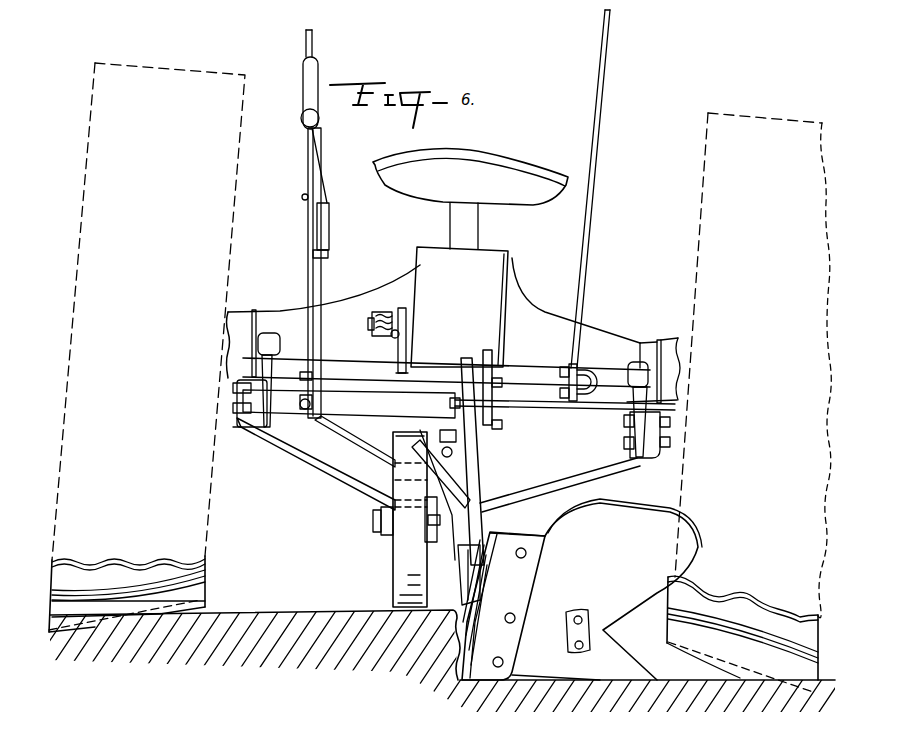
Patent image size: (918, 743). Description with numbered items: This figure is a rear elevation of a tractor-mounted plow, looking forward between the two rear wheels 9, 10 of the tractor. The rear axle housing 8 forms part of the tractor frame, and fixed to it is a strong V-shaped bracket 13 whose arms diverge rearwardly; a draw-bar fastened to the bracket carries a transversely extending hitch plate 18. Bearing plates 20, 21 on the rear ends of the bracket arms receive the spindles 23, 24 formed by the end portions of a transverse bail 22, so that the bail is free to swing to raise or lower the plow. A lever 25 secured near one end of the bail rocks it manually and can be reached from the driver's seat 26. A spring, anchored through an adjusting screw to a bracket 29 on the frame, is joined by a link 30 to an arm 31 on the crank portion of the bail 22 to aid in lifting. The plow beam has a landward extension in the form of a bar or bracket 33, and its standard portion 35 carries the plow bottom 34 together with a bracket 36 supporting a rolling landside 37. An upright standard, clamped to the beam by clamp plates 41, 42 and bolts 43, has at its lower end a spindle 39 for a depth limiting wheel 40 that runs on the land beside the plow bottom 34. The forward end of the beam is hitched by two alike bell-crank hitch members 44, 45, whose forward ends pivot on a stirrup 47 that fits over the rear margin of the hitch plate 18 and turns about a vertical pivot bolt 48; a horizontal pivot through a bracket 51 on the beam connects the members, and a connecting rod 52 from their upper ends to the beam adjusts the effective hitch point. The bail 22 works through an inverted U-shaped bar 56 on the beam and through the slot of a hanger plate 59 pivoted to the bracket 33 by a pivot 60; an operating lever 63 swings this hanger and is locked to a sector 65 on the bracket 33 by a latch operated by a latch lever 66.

The rear axle housing 8 is at (300, 322).
The rear wheel 9 is at (205, 566).
The rear wheel 10 is at (682, 595).
The V-shaped bracket 13 is at (620, 455).
The hitch plate 18 is at (505, 478).
The bearing plate 20 is at (245, 372).
The bearing plate 21 is at (370, 323).
The bail 22 is at (430, 369).
The spindle 23 is at (254, 345).
The spindle 24 is at (604, 372).
The lever 25 is at (594, 152).
The driver's seat 26 is at (470, 199).
The bracket 29 is at (394, 314).
The link 30 is at (390, 340).
The arm 31 is at (406, 325).
The bar or bracket 33 is at (351, 418).
The plow bottom 34 is at (607, 589).
The standard portion 35 is at (467, 358).
The bracket 36 is at (468, 598).
The rolling landside 37 is at (490, 585).
The spindle 39 is at (373, 521).
The depth limiting wheel 40 is at (405, 545).
The clamp plate 41 is at (462, 406).
The clamp plate 42 is at (492, 405).
The bolt 43 is at (502, 384).
The hitch member 44 is at (434, 540).
The hitch member 45 is at (470, 500).
The stirrup 47 is at (440, 460).
The pivot bolt 48 is at (448, 430).
The bracket 51 is at (512, 534).
The connecting rod 52 is at (446, 447).
The inverted U-shaped bar 56 is at (492, 358).
The plate 59 is at (314, 378).
The pivot 60 is at (314, 408).
The operating lever 63 is at (312, 40).
The sector 65 is at (322, 283).
The latch lever 66 is at (318, 78).